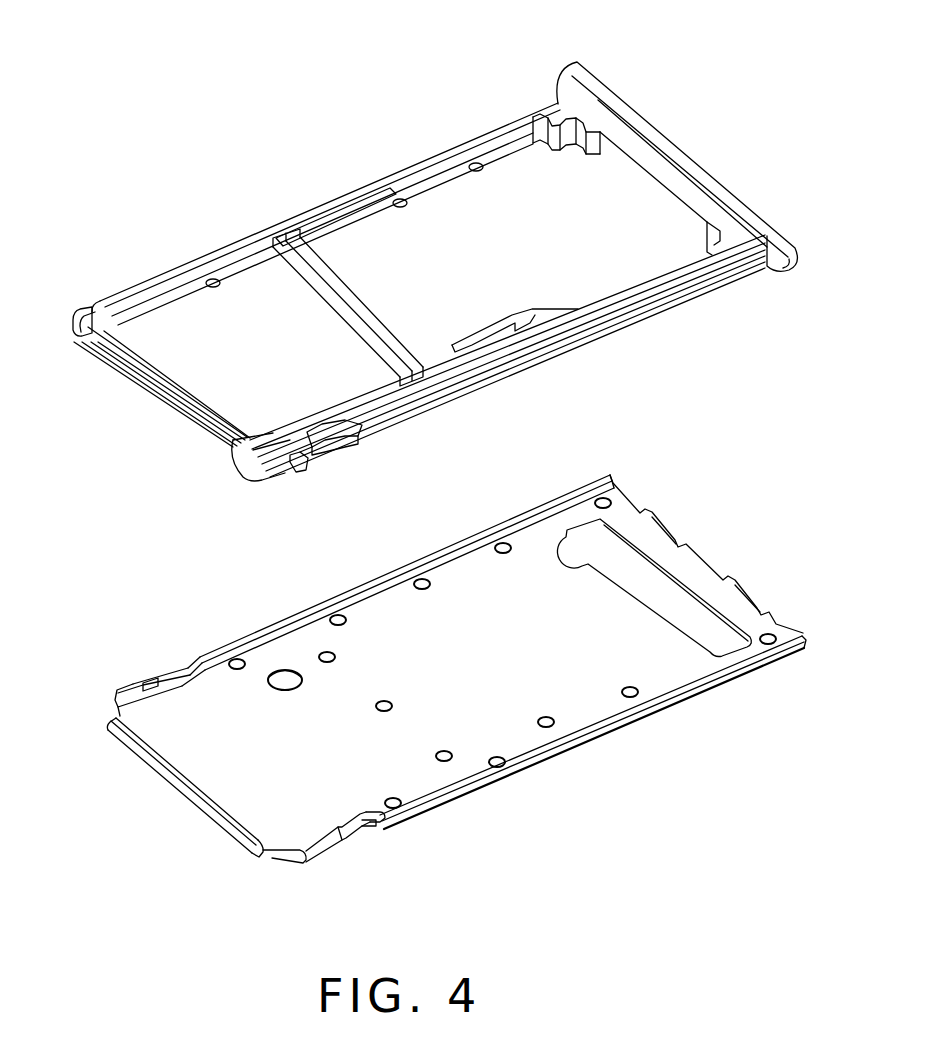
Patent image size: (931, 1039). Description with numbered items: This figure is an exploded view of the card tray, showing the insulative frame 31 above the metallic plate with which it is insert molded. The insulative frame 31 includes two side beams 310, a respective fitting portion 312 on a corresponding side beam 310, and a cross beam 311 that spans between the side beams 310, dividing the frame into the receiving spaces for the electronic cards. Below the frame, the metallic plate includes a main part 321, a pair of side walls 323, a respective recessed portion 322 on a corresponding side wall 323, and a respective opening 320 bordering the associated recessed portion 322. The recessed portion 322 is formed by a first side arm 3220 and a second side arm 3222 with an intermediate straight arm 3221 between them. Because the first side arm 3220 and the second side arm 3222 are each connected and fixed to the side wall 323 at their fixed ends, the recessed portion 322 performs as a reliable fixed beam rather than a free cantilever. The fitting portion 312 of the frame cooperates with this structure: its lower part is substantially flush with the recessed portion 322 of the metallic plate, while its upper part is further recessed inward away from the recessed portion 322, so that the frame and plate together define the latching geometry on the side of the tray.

The insulative frame 31 is at (435, 261).
The side beam 310 is at (493, 363).
The cross beam 311 is at (313, 297).
The fitting portion 312 is at (323, 433).
The opening 320 is at (317, 595).
The first side arm 3220 is at (195, 665).
The intermediate straight arm 3221 is at (150, 682).
The second side arm 3222 is at (133, 684).
The main part 321 is at (483, 590).
The recessed portion 322 is at (350, 828).
The side wall 323 is at (580, 737).